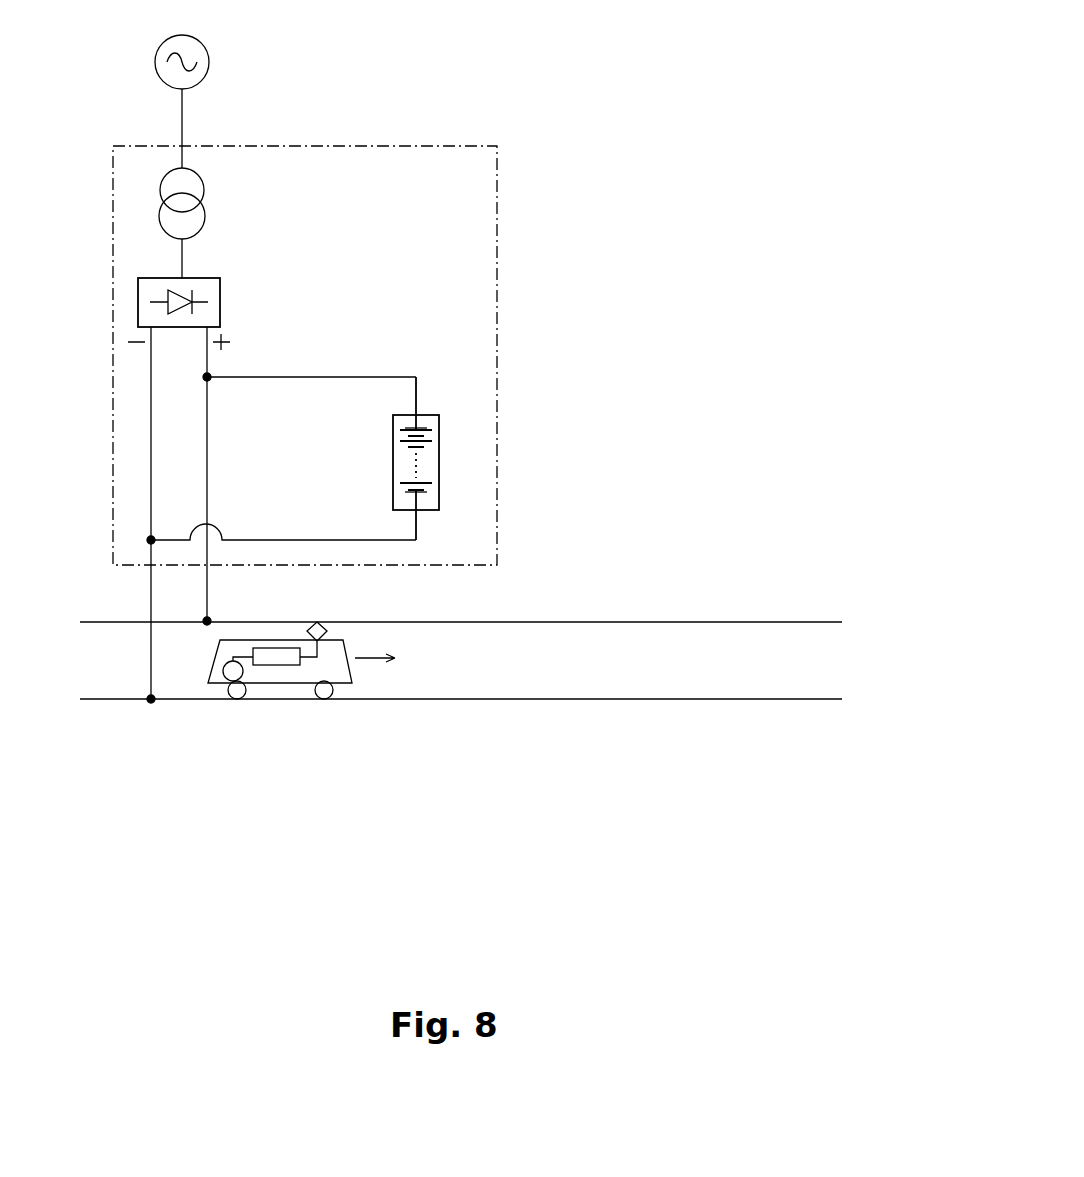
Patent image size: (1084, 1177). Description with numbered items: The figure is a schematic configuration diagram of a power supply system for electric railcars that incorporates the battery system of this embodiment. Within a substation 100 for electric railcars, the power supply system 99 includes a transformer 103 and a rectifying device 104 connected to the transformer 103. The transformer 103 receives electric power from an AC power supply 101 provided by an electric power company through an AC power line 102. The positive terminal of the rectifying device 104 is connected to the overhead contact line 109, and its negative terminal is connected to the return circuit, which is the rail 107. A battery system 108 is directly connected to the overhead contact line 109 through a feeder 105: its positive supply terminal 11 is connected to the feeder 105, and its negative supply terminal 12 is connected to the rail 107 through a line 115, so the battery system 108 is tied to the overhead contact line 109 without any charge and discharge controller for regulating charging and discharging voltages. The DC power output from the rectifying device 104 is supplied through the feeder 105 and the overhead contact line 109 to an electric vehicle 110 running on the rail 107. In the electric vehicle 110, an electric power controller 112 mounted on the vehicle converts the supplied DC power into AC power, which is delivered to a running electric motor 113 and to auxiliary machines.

The substation 100 is at (427, 100).
The power supply system 99 is at (497, 228).
The AC power supply 101 is at (209, 60).
The AC power line 102 is at (182, 108).
The transformer 103 is at (204, 186).
The rectifying device 104 is at (220, 296).
The feeder 105 is at (207, 405).
The line 115 is at (282, 540).
The battery system 108 is at (392, 445).
The positive terminal 11 is at (419, 413).
The negative terminal 12 is at (419, 512).
The overhead contact line 109 is at (656, 620).
The return circuit (rail) 107 is at (604, 702).
The electric vehicle 110 is at (353, 673).
The electric power controller 112 is at (277, 667).
The running electric motor 113 is at (213, 672).